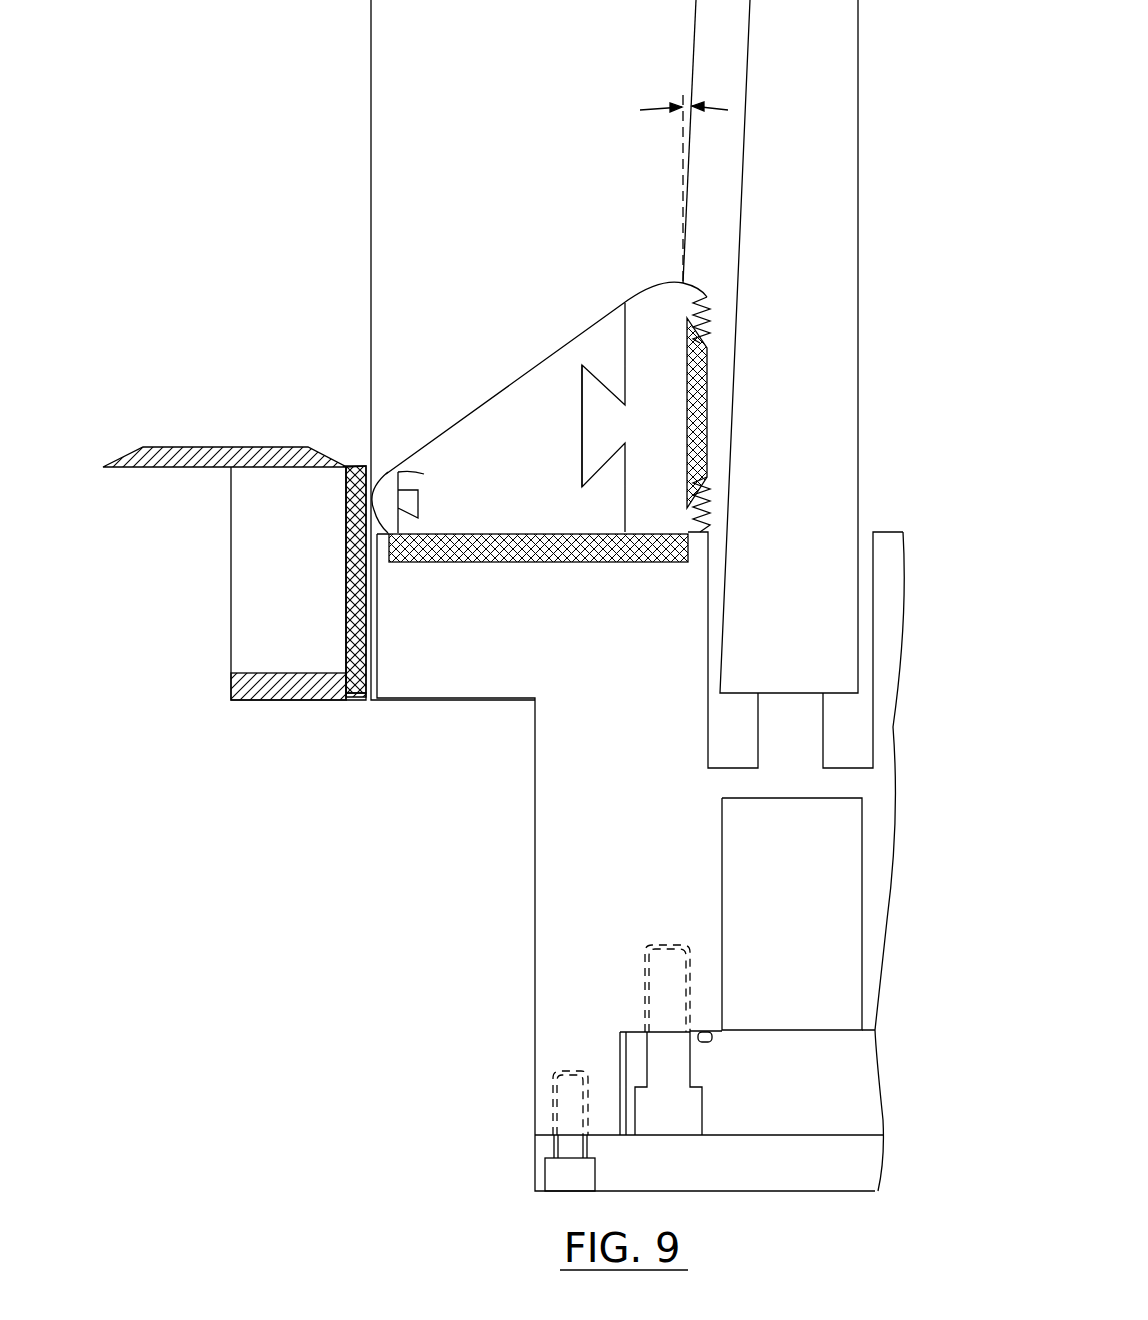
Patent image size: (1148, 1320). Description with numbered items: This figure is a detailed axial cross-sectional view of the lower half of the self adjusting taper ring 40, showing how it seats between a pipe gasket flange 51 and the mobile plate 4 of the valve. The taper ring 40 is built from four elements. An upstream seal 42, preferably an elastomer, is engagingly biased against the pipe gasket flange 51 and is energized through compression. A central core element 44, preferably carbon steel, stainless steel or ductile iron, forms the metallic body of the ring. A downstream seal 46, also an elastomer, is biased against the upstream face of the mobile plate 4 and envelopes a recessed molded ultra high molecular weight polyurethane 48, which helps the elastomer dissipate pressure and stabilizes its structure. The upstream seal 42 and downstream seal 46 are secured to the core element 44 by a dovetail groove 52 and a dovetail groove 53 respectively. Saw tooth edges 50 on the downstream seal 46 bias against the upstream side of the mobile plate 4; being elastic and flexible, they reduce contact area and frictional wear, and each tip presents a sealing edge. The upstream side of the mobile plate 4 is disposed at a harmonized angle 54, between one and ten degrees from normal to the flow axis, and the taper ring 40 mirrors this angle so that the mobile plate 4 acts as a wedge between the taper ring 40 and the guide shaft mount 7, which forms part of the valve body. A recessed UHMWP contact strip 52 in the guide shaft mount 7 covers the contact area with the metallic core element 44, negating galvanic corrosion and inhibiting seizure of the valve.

The mobile plate 4 is at (806, 206).
The guide shaft mount 7 is at (476, 662).
The self adjusting taper ring 40 is at (500, 392).
The upstream seal 42 is at (384, 470).
The central core element 44 is at (527, 468).
The downstream seal 46 is at (642, 335).
The recessed molded ultra high molecular weight polyurethane 48 is at (708, 405).
The saw tooth edges 50 is at (718, 318).
The pipe gasket flange 51 is at (343, 538).
The dovetail groove 52 is at (418, 489).
The dovetail groove 53 is at (582, 365).
The angle 54 is at (685, 96).